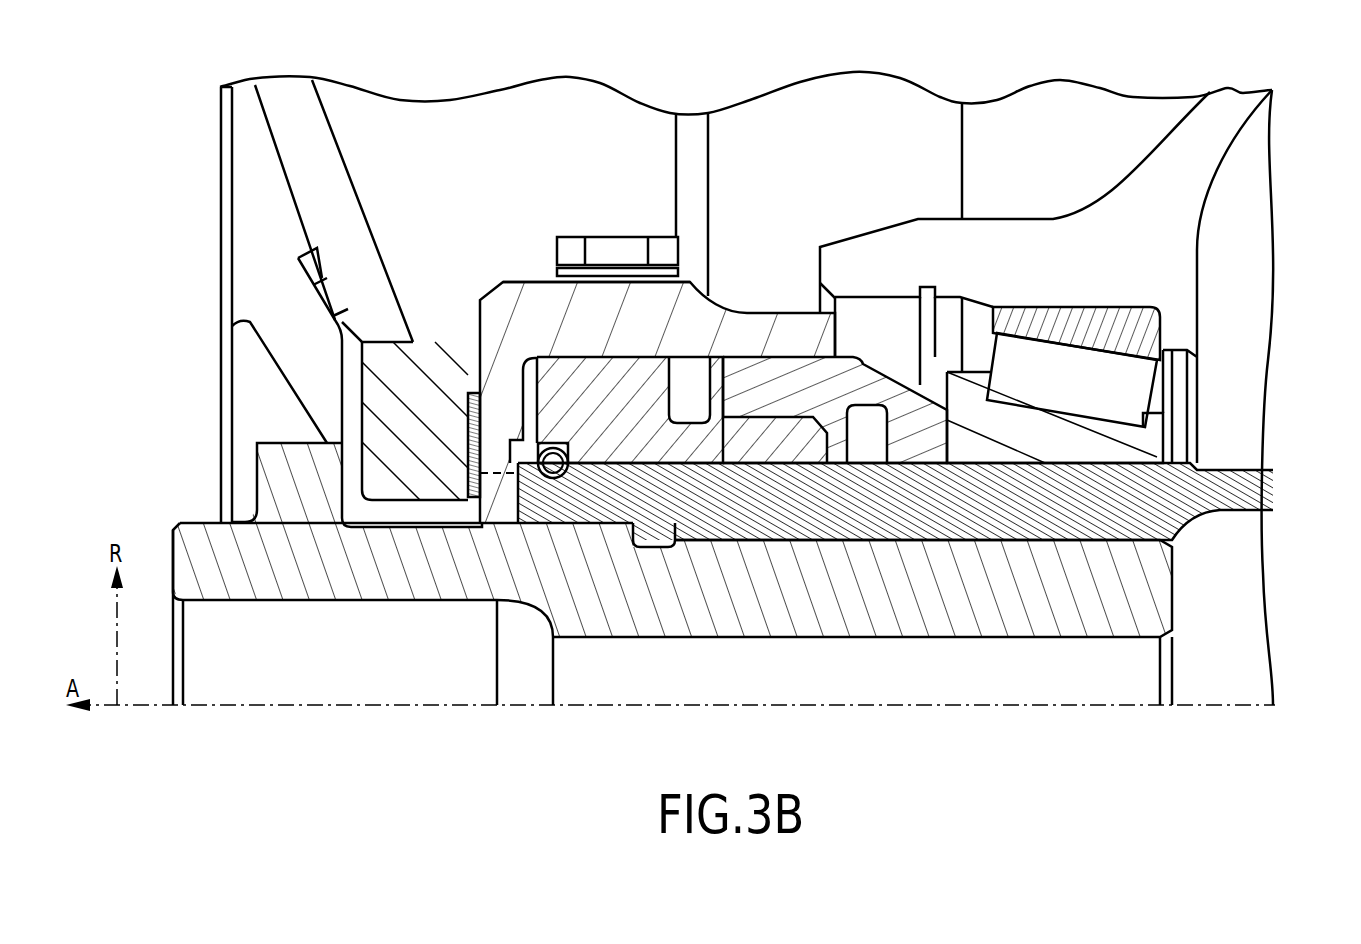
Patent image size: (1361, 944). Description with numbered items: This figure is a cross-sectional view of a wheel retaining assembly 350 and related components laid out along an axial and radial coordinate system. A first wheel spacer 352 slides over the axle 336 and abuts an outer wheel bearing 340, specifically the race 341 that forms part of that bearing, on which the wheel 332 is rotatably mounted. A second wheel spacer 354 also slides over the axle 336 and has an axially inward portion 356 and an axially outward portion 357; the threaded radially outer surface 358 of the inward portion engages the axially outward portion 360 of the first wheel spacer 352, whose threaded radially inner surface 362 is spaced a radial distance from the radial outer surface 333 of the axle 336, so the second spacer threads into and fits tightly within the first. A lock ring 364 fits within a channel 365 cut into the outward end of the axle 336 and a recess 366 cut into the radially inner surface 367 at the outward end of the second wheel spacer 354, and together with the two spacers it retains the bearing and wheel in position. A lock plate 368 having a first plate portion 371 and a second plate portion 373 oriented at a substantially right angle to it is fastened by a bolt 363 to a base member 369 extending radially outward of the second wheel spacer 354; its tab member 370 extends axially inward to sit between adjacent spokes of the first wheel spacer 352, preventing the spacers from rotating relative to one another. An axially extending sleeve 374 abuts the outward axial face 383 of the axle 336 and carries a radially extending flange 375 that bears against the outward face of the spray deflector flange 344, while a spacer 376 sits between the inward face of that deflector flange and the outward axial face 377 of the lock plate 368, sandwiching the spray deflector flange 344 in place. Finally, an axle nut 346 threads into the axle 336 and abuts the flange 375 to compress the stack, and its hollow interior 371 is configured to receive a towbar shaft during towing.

The wheel 332 is at (1170, 221).
The radial outer surface 333 is at (800, 455).
The axle 336 is at (1255, 488).
The outer wheel bearing 340 is at (1032, 357).
The race 341 is at (1145, 443).
The spray deflector flange 344 is at (408, 400).
The axle nut 346 is at (203, 535).
The wheel retaining assembly 350 is at (178, 130).
The first wheel spacer 352 is at (866, 378).
The second wheel spacer 354 is at (630, 402).
The axially inward portion 356 is at (750, 435).
The axially outward portion 357 is at (627, 440).
The radially outer surface 358 is at (743, 420).
The axially outward portion 360 is at (793, 372).
The radially inner surface 362 is at (788, 418).
The bolt 363 is at (612, 243).
The lock ring 364 is at (535, 500).
The channel 365 is at (550, 465).
The recess 366 is at (552, 447).
The radially inner surface 367 is at (584, 462).
The lock plate 368 is at (533, 290).
The base member 369 is at (653, 368).
The tab member 370 is at (823, 327).
The first plate portion 371 is at (598, 297).
The second plate portion 373 is at (498, 385).
The axially extending sleeve 374 is at (395, 508).
The flange 375 is at (353, 418).
The spacer 376 is at (452, 498).
The outward axial face 377 is at (495, 385).
The outward axial face 383 is at (470, 500).